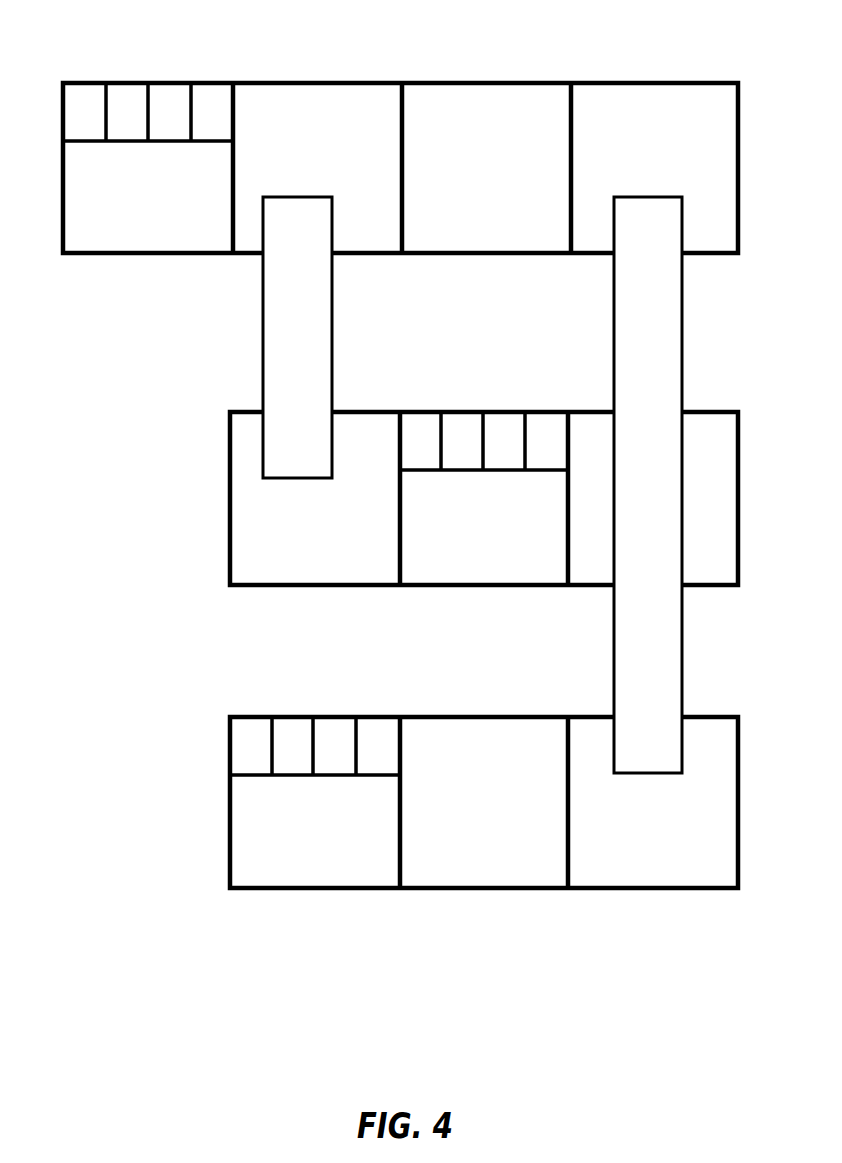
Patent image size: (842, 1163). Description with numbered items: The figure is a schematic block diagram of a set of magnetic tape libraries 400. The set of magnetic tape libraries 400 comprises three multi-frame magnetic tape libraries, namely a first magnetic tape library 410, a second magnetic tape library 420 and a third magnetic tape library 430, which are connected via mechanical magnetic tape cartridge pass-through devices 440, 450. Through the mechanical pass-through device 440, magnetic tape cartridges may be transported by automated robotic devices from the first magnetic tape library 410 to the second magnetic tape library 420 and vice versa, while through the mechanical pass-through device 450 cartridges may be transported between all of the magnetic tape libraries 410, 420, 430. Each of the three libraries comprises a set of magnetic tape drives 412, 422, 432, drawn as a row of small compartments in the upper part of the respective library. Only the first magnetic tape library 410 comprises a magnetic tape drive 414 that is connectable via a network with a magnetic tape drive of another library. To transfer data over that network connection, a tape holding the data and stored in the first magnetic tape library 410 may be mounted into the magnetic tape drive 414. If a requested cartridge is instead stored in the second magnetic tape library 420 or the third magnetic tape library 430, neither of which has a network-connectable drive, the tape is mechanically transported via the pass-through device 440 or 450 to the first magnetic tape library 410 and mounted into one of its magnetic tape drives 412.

The set of magnetic tape libraries 400 is at (207, 642).
The first magnetic tape library 410 is at (389, 137).
The set of magnetic tape drives 412 is at (210, 93).
The magnetic tape drive 414 is at (87, 93).
The second magnetic tape library 420 is at (484, 495).
The set of magnetic tape drives 422 is at (510, 425).
The third magnetic tape library 430 is at (484, 772).
The set of magnetic tape drives 432 is at (338, 728).
The mechanical pass-through device 440 is at (333, 352).
The mechanical pass-through device 450 is at (613, 353).